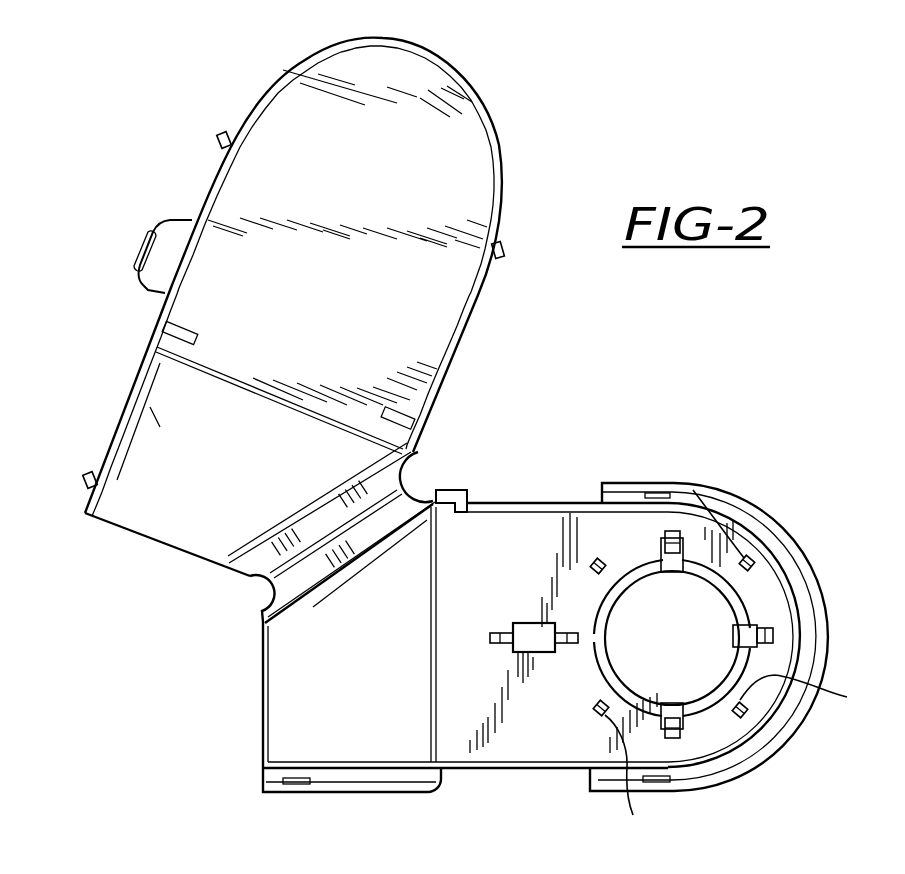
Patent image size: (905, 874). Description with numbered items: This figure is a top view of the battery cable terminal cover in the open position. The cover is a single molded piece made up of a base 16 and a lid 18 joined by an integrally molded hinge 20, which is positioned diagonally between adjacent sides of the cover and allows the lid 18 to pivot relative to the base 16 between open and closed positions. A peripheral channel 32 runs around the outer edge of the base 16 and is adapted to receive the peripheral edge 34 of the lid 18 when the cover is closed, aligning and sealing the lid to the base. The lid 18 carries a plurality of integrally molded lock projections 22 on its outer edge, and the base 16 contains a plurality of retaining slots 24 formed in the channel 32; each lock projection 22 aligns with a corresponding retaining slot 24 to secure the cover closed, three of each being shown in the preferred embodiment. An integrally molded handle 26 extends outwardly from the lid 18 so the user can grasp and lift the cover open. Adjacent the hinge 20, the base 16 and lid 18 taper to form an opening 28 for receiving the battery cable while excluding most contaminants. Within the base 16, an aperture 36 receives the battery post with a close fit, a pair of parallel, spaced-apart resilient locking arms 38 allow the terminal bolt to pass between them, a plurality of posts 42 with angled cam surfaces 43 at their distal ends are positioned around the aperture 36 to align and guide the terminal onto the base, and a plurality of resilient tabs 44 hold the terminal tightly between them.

The base 16 is at (503, 547).
The lid 18 is at (460, 155).
The hinge 20 is at (298, 530).
The lock projections 22 is at (220, 137).
The retaining slots 24 is at (298, 778).
The handle 26 is at (170, 233).
The opening 28 is at (240, 655).
The peripheral channel 32 is at (757, 525).
The peripheral edge 34 is at (460, 78).
The aperture 36 is at (705, 640).
The resilient locking arms 38 is at (562, 645).
The posts 42 is at (594, 562).
The angled cam surface 43 is at (744, 758).
The resilient tabs 44 is at (674, 531).